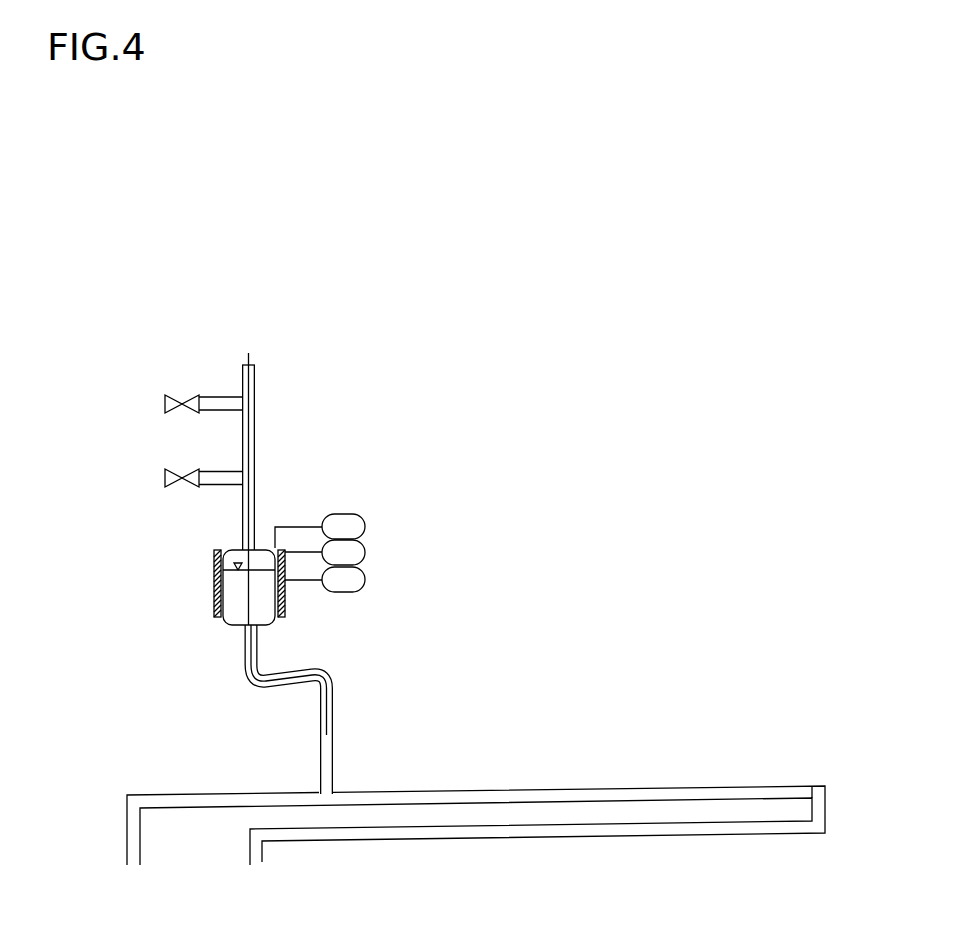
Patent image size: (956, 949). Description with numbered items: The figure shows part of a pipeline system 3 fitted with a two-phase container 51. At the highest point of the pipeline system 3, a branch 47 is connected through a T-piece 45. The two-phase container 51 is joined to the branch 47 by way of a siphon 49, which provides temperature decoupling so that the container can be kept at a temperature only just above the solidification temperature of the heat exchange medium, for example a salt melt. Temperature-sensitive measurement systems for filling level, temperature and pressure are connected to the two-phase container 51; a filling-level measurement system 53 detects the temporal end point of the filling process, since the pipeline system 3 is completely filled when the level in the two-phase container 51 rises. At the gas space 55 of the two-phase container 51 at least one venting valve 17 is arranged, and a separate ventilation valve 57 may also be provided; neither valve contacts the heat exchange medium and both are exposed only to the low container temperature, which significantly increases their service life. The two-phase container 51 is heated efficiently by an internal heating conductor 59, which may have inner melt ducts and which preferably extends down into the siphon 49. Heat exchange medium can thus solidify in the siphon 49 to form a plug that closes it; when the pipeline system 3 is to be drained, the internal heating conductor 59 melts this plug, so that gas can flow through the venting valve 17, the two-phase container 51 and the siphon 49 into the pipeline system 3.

The pipeline system 3 is at (560, 788).
The venting valve 17 is at (173, 395).
The T-piece 45 is at (337, 792).
The branch 47 is at (334, 717).
The siphon 49 is at (272, 697).
The two-phase container 51 is at (214, 607).
The filling-level measurement system 53 is at (365, 552).
The gas space 55 is at (264, 550).
The ventilation valve 57 is at (165, 478).
The internal heating conductor 59 is at (249, 418).